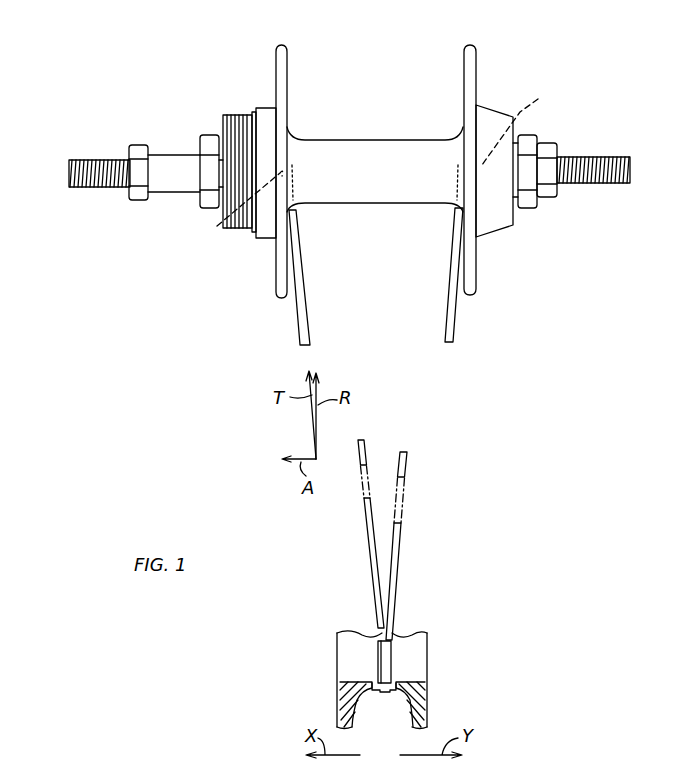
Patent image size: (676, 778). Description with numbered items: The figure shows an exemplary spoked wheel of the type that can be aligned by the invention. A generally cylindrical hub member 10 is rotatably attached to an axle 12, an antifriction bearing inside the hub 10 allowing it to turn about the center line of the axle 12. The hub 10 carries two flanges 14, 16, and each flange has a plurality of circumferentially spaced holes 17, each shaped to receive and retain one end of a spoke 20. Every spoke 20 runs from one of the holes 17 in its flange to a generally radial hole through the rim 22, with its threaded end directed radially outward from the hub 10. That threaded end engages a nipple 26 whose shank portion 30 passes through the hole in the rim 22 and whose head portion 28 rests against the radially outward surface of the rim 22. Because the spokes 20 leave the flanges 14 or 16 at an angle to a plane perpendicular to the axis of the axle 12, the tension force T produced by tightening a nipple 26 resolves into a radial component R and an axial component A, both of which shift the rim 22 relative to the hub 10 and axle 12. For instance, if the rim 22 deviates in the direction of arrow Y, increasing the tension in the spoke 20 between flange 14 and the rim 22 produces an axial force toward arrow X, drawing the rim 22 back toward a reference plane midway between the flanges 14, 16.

The hub member 10 is at (383, 123).
The axle 12 is at (597, 157).
The flange 14 is at (283, 67).
The flange 16 is at (477, 57).
The holes 17 is at (216, 226).
The spoke 20 is at (307, 300).
The rim 22 is at (418, 706).
The nipple 26 is at (378, 675).
The head portion 28 is at (379, 694).
The shank portion 30 is at (391, 660).